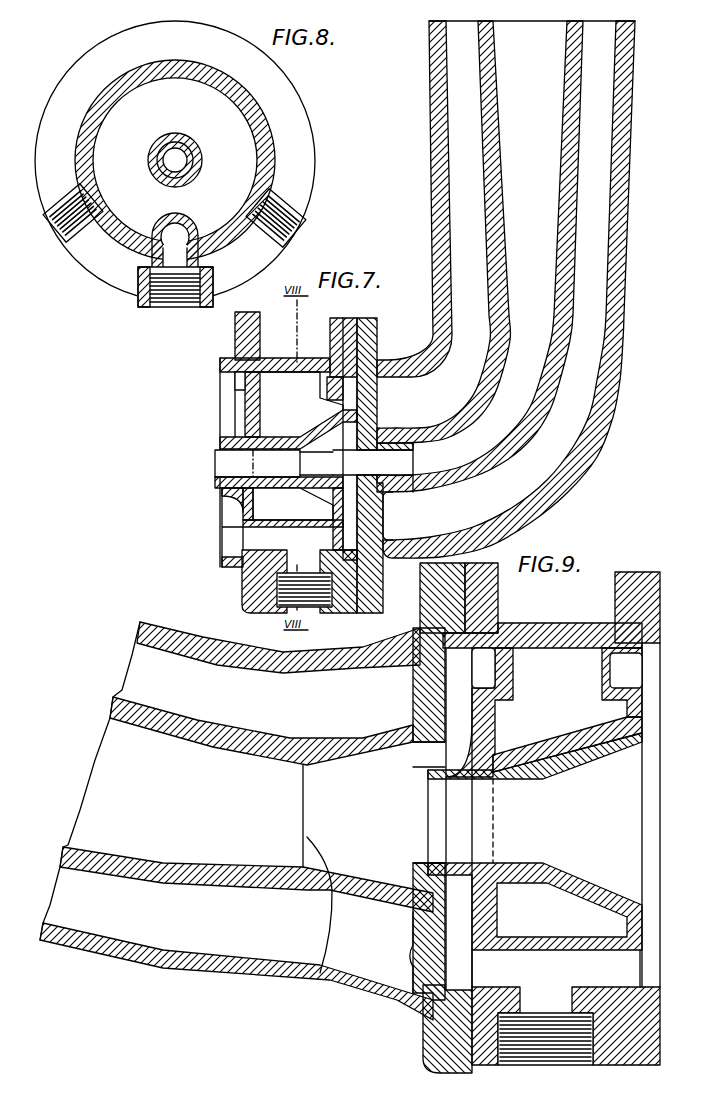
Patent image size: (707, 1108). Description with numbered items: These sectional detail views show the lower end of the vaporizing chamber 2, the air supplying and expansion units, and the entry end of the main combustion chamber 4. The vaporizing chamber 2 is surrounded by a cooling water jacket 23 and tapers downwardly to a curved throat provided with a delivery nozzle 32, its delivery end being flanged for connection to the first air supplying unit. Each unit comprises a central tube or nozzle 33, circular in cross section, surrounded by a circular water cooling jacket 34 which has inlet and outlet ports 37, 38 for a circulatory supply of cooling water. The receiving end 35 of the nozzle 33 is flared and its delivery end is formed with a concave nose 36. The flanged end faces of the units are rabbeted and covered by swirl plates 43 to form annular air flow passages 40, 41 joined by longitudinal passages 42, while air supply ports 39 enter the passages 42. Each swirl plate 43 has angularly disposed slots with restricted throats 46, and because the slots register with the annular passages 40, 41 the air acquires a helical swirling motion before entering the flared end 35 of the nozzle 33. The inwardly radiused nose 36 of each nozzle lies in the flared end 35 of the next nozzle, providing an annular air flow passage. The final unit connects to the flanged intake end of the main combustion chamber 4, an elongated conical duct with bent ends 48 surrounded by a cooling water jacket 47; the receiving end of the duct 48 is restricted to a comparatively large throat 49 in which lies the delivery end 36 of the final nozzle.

In FIG. 7, the vaporizing chamber 2 is at (624, 232).
In FIG. 7, the cooling water jacket 23 is at (462, 168).
In FIG. 7, the delivery nozzle 32 is at (395, 462).
In FIG. 8, the central tube or nozzle 33 is at (173, 152).
In FIG. 7, the central tube or nozzle 33 is at (256, 506).
In FIG. 9, the central tube or nozzle 33 is at (535, 860).
In FIG. 8, the circular water cooling jacket 34 is at (277, 118).
In FIG. 7, the circular water cooling jacket 34 is at (275, 418).
In FIG. 9, the circular water cooling jacket 34 is at (568, 660).
In FIG. 7, the receiving end 35 is at (335, 432).
In FIG. 9, the receiving end 35 is at (592, 753).
In FIG. 7, the concave nose 36 is at (222, 454).
In FIG. 9, the concave nose 36 is at (425, 783).
In FIG. 8, the inlet port 37 is at (288, 222).
In FIG. 8, the outlet port 38 is at (72, 232).
In FIG. 8, the air supply port 39 is at (185, 288).
In FIG. 7, the air supply port 39 is at (295, 600).
In FIG. 9, the air supply port 39 is at (545, 1050).
In FIG. 7, the annular air flow passage 40 is at (340, 380).
In FIG. 9, the annular air flow passage 40 is at (622, 678).
In FIG. 7, the annular air flow passage 41 is at (240, 386).
In FIG. 9, the annular air flow passage 41 is at (500, 626).
In FIG. 8, the longitudinal passage 42 is at (177, 242).
In FIG. 7, the longitudinal passage 42 is at (275, 546).
In FIG. 9, the longitudinal passage 42 is at (557, 967).
In FIG. 7, the swirl plate 43 is at (225, 360).
In FIG. 9, the swirl plate 43 is at (425, 632).
In FIG. 7, the restricted throat 46 is at (374, 512).
In FIG. 9, the main combustion chamber 4 is at (170, 636).
In FIG. 9, the cooling water jacket 47 is at (214, 683).
In FIG. 9, the bent end 48 is at (261, 782).
In FIG. 9, the throat 49 is at (327, 925).